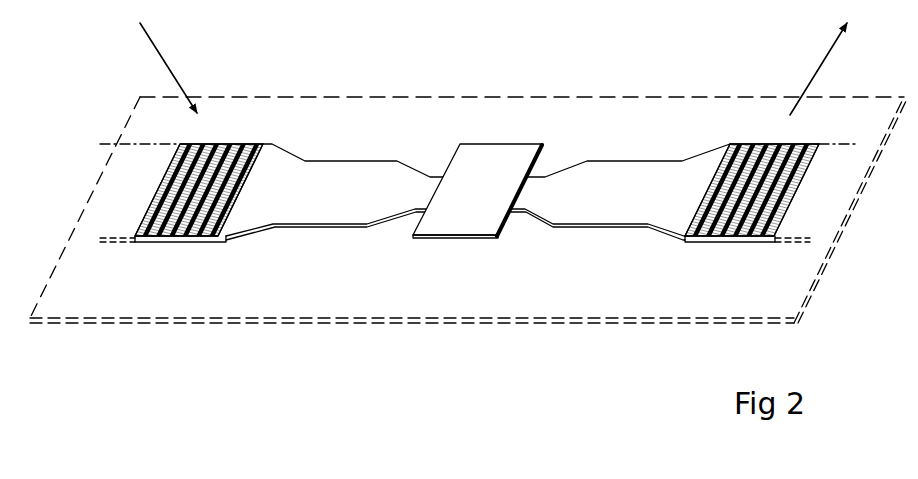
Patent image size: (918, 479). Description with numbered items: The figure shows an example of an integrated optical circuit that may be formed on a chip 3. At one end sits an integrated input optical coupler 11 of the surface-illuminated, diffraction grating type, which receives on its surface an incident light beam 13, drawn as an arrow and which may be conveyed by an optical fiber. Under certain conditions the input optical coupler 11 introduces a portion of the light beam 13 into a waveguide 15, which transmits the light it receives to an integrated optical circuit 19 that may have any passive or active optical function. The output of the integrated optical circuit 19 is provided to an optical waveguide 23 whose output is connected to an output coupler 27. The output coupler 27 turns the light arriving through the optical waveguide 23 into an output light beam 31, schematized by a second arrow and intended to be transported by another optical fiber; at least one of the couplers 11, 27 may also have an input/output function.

The chip 3 is at (217, 292).
The integrated input optical coupler 11 is at (229, 144).
The incident light beam 13 is at (168, 67).
The waveguide 15 is at (333, 173).
The integrated optical circuit 19 is at (490, 160).
The optical waveguide 23 is at (637, 175).
The output coupler 27 is at (752, 145).
The output light beam 31 is at (828, 54).